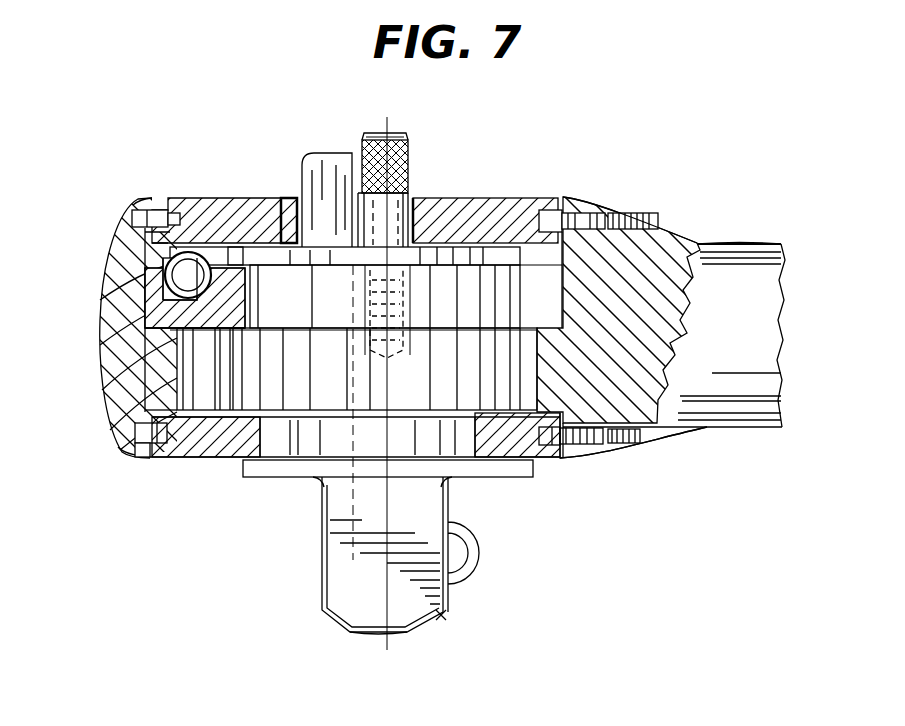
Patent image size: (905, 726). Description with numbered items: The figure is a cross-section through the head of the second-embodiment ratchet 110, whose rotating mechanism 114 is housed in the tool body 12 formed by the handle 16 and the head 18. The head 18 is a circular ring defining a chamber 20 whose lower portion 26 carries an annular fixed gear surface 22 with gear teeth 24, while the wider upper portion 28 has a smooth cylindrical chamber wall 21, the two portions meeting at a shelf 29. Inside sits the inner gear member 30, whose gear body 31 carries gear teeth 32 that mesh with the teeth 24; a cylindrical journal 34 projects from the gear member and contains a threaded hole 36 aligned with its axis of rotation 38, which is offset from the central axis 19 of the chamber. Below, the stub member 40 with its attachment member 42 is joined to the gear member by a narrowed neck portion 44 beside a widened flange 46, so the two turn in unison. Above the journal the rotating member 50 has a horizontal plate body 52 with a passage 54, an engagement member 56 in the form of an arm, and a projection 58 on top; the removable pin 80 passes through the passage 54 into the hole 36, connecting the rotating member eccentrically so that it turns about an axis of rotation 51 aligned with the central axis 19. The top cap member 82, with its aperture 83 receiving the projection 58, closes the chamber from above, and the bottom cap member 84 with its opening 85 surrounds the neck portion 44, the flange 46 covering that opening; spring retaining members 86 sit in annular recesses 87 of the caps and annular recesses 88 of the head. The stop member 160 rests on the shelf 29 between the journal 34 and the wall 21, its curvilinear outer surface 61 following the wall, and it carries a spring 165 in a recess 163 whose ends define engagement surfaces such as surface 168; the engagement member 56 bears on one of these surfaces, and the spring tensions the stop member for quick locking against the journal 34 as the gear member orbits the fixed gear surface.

The tool body 12 is at (773, 238).
The handle 16 is at (770, 342).
The head 18 is at (600, 226).
The central axis 19 is at (352, 125).
The chamber 20 is at (218, 411).
The chamber wall 21 is at (575, 228).
The fixed gear surface 22 is at (108, 427).
The gear teeth 24 is at (120, 440).
The lower portion 26 is at (210, 354).
The upper portion 28 is at (572, 274).
The shelf 29 is at (184, 350).
The inner gear member 30 is at (633, 383).
The gear body 31 is at (320, 478).
The gear teeth 32 is at (470, 428).
The journal 34 is at (533, 277).
The hole 36 is at (400, 287).
The axis of rotation 38 is at (395, 128).
The stub member 40 is at (440, 617).
The attachment member 42 is at (330, 593).
The neck portion 44 is at (466, 440).
The flange 46 is at (523, 460).
The rotating member 50 is at (485, 268).
The axis of rotation 51 is at (352, 152).
The plate body 52 is at (508, 270).
The passage 54 is at (423, 268).
The engagement member 56 is at (232, 240).
The projection 58 is at (328, 152).
The outer surface 61 is at (165, 322).
The removable pin 80 is at (405, 140).
The top cap member 82 is at (153, 205).
The aperture 83 is at (288, 242).
The bottom cap member 84 is at (190, 458).
The opening 85 is at (277, 460).
The retaining member 86 is at (140, 200).
The annular recess 87 is at (177, 207).
The annular recess 88 is at (123, 207).
The ratchet 110 is at (808, 403).
The rotating mechanism 114 is at (655, 330).
The stop member 160 is at (240, 265).
The recess 163 is at (160, 297).
The spring 165 is at (165, 272).
The engagement surface 168 is at (148, 237).